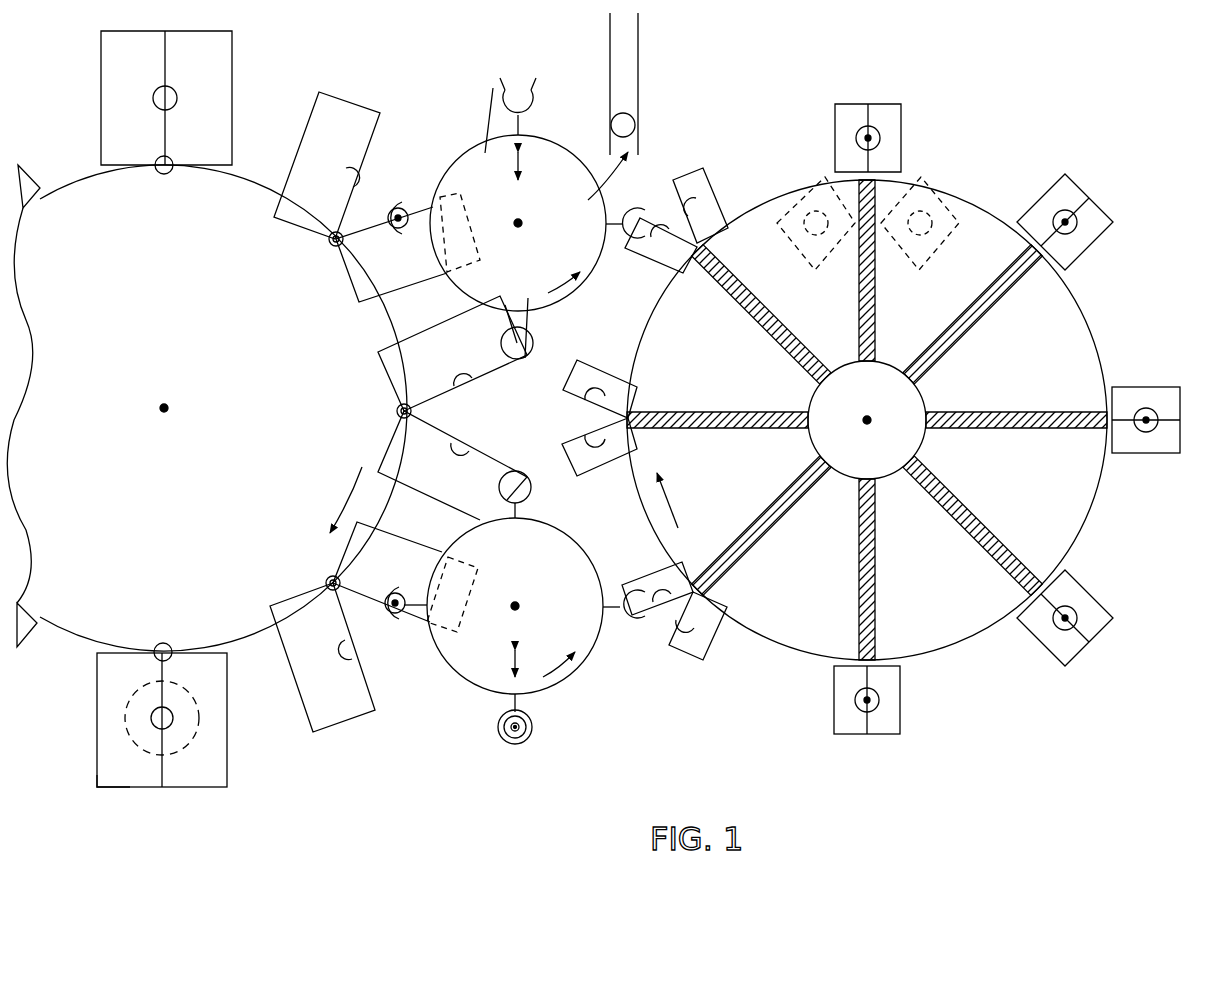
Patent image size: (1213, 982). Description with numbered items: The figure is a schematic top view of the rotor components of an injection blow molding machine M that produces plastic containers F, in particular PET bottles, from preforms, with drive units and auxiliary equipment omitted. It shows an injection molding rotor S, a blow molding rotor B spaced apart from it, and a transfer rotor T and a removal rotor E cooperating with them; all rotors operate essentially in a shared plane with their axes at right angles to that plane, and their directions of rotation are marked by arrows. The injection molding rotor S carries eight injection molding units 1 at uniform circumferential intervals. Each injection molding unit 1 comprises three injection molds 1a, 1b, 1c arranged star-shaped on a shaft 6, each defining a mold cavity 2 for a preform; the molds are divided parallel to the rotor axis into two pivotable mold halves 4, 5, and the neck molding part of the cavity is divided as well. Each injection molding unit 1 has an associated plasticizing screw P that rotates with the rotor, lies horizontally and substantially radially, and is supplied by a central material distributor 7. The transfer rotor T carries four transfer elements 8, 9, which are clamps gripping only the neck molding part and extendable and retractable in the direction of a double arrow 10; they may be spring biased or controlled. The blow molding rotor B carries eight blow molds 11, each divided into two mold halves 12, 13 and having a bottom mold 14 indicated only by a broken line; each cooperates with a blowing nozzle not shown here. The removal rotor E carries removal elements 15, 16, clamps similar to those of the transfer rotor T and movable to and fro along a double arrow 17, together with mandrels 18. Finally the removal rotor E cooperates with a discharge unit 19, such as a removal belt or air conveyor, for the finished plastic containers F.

The injection molding unit 1 is at (875, 172).
The injection mold 1a is at (859, 114).
The injection mold 1b is at (807, 264).
The injection mold 1c is at (934, 270).
The mold cavity 2 is at (880, 133).
The mold half 4 is at (836, 108).
The mold half 5 is at (895, 108).
The shaft 6 is at (866, 182).
The central material distributor 7 is at (928, 400).
The transfer element 8 is at (518, 755).
The transfer element 9 is at (499, 732).
The double arrow 10 is at (520, 659).
The blow mold 11 is at (153, 440).
The mold half 12 is at (97, 775).
The mold half 13 is at (222, 750).
The bottom mold 14 is at (140, 752).
The removal element 15 is at (540, 86).
The removal element 16 is at (532, 93).
The double arrow 17 is at (508, 168).
The mandrel 18 is at (483, 121).
The discharge unit 19 is at (627, 52).
The blow molding rotor B is at (66, 644).
The removal rotor E is at (524, 198).
The plastic container F is at (636, 125).
The injection blow molding machine M is at (1112, 204).
The plasticizing screw P is at (873, 270).
The injection molding rotor S is at (871, 393).
The transfer rotor T is at (525, 644).